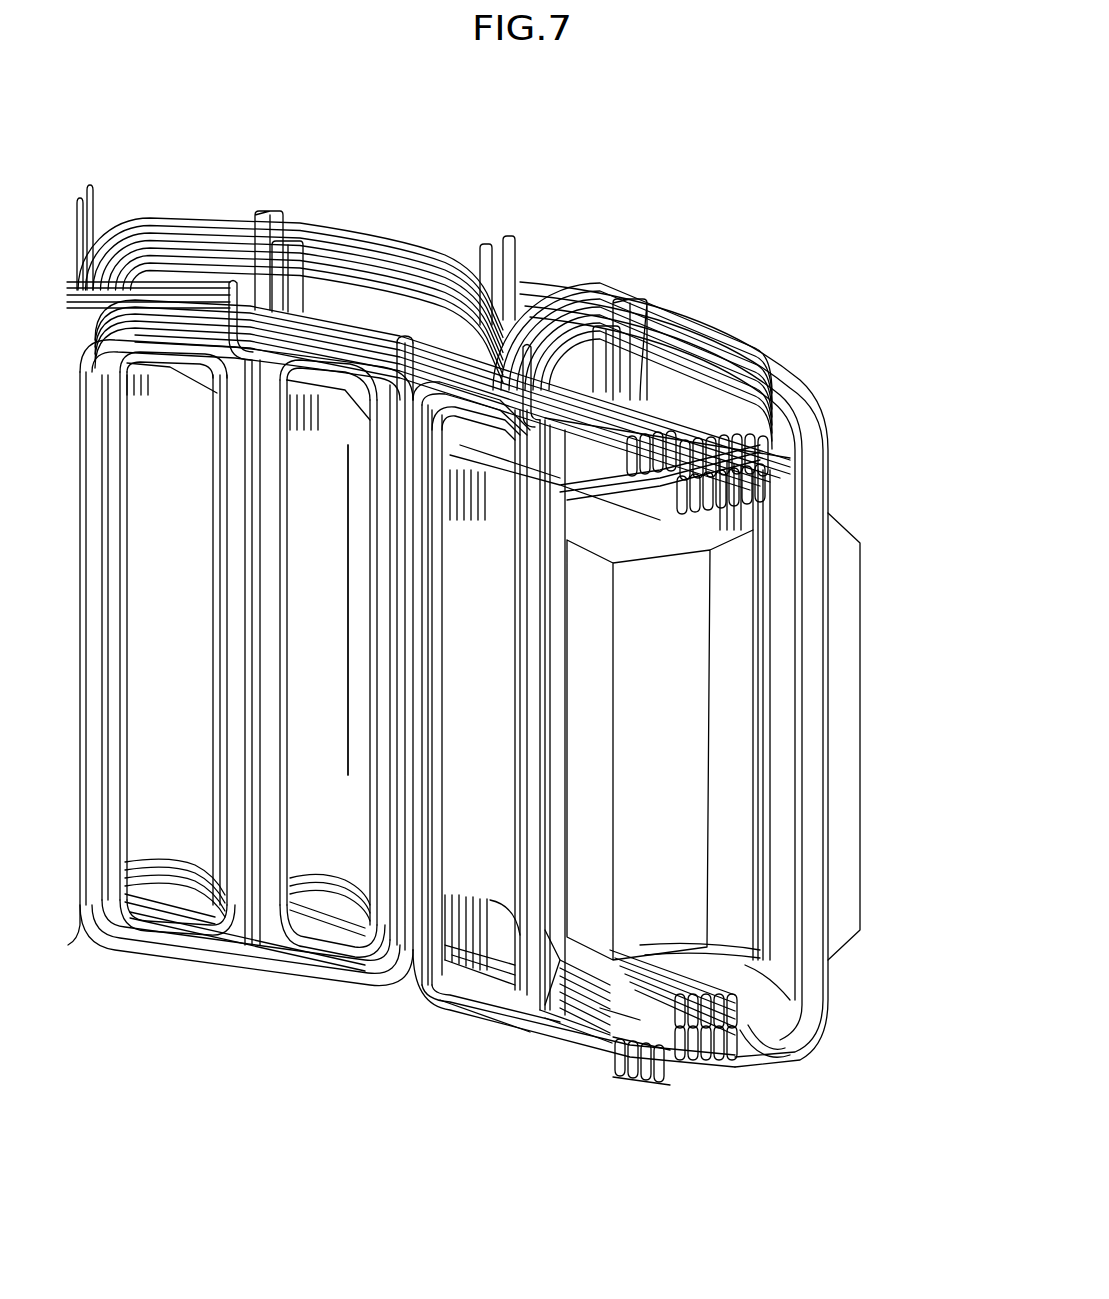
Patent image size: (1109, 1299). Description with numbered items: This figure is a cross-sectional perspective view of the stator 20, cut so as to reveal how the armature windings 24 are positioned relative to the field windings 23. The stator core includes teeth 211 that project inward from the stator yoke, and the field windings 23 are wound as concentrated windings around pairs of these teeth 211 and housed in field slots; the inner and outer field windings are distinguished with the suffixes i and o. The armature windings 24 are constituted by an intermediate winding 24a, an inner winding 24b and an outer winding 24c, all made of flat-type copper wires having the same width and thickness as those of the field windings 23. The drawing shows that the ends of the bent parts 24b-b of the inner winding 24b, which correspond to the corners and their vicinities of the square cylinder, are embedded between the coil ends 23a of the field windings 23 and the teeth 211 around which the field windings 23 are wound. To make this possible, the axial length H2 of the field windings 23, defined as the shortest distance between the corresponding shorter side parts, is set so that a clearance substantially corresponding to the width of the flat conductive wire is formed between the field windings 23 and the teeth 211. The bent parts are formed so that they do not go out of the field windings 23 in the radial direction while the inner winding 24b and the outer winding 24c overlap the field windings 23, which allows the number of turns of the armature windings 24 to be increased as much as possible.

The stator 20 is at (780, 180).
The teeth 211 is at (728, 664).
The field windings 23 is at (828, 974).
The coil ends 23a is at (525, 1042).
The armature windings 24 is at (712, 1070).
The intermediate winding 24a is at (725, 1055).
The inner winding 24b is at (600, 1012).
The bent parts 24b-b is at (628, 1020).
The outer winding 24c is at (733, 963).
The axial length H2 is at (345, 775).